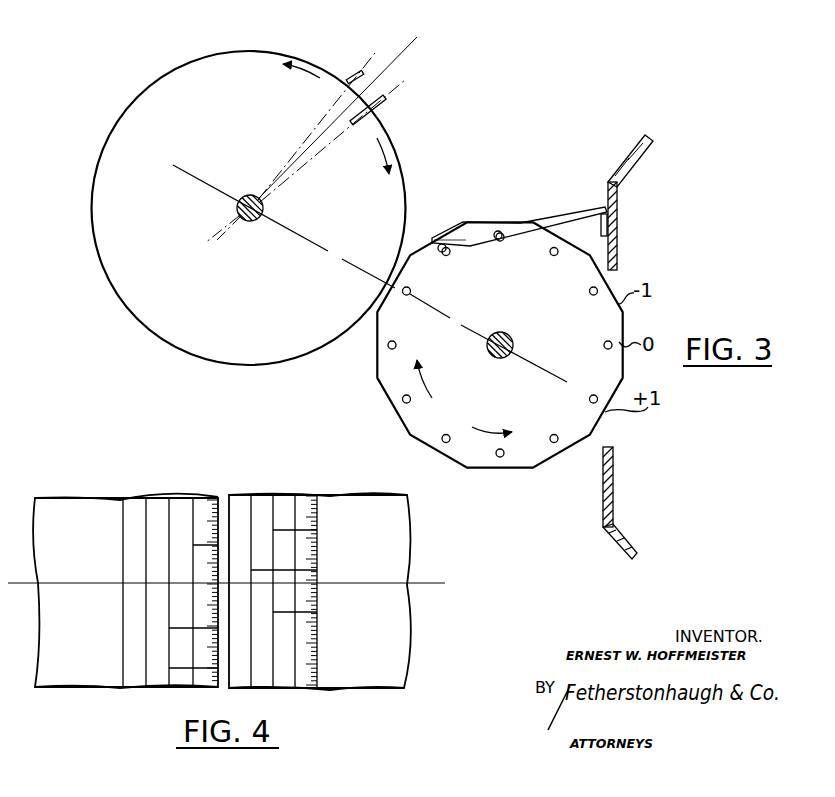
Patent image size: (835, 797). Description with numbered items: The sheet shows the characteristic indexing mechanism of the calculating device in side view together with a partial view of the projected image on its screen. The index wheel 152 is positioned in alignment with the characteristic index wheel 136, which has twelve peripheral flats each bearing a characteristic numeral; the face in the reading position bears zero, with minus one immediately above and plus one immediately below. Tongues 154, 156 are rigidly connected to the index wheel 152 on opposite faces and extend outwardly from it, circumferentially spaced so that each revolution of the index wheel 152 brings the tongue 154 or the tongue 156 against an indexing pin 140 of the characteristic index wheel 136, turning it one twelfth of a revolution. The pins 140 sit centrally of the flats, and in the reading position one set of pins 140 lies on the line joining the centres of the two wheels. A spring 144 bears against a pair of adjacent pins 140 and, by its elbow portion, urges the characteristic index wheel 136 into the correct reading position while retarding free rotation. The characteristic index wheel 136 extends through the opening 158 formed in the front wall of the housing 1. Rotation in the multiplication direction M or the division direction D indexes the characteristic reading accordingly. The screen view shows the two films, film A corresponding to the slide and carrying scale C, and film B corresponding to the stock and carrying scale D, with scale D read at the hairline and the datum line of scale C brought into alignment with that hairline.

In FIG. 3, the housing 1 is at (617, 200).
In FIG. 3, the characteristic index wheel 136 is at (532, 452).
In FIG. 3, the indexing pins 140 is at (496, 240).
In FIG. 3, the spring 144 is at (545, 217).
In FIG. 3, the index wheel 152 is at (182, 337).
In FIG. 3, the tongue 154 is at (381, 103).
In FIG. 3, the tongue 156 is at (351, 73).
In FIG. 3, the opening 158 is at (632, 436).
In FIG. 4, the film A is at (68, 508).
In FIG. 4, the film B is at (369, 512).
In FIG. 4, the scale C is at (123, 510).
In FIG. 4, the scale D is at (320, 510).